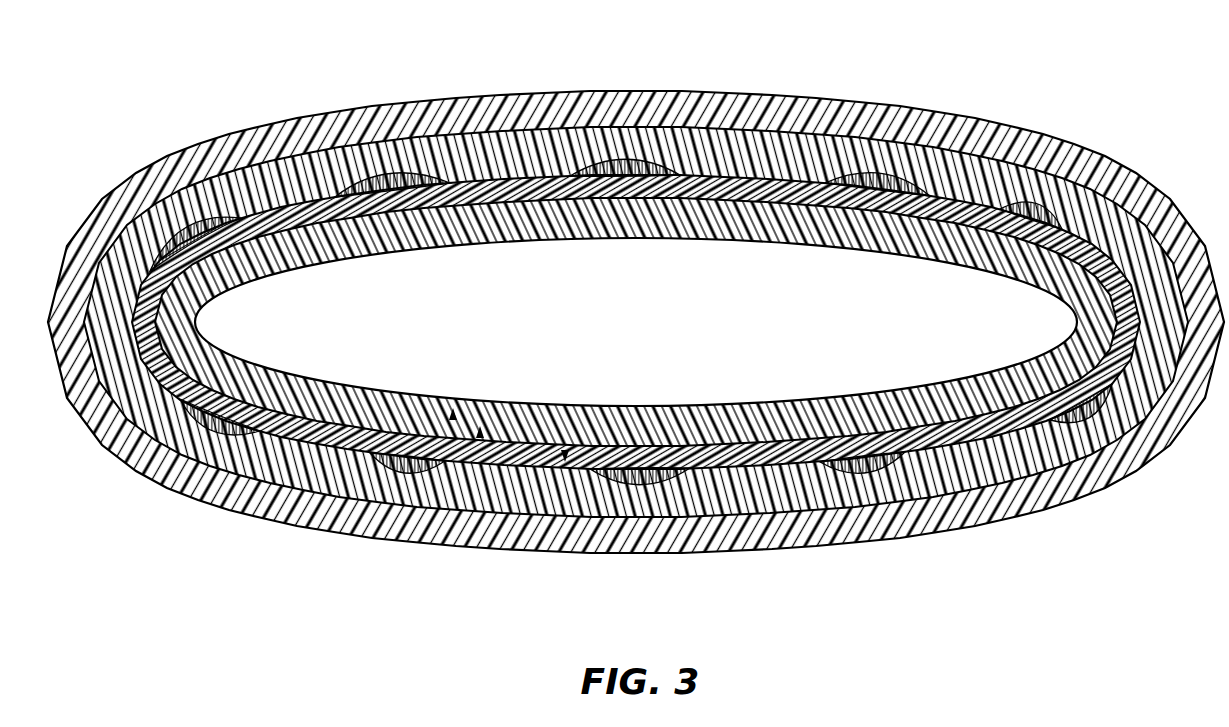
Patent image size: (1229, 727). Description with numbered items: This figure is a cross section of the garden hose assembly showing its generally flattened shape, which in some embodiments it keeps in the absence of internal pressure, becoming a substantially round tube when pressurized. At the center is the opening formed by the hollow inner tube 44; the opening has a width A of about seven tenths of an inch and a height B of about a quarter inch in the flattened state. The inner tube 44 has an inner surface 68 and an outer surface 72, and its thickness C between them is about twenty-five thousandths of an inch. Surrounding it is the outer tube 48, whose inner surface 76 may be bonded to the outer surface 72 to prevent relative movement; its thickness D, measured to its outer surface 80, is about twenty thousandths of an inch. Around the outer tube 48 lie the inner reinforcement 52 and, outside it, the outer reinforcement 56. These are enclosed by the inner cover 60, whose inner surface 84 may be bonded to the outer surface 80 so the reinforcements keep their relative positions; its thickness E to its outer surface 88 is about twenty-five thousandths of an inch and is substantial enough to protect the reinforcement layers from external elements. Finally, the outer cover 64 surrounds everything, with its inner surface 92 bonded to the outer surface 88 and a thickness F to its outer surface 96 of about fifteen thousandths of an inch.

The inner tube 44 is at (835, 228).
The outer tube 48 is at (748, 182).
The inner reinforcement 52 is at (660, 165).
The outer reinforcement 56 is at (597, 162).
The inner cover 60 is at (445, 150).
The outer cover 64 is at (354, 118).
The inner surface 68 is at (398, 537).
The outer surface 72 is at (480, 440).
The inner surface 76 is at (543, 447).
The outer surface 80 is at (590, 470).
The inner surface 84 is at (728, 482).
The outer surface 88 is at (776, 492).
The inner surface 92 is at (870, 515).
The outer surface 96 is at (918, 512).
The width A is at (1074, 322).
The height B is at (636, 244).
The thickness C is at (737, 248).
The thickness D is at (773, 228).
The thickness E is at (995, 165).
The thickness F is at (1010, 112).